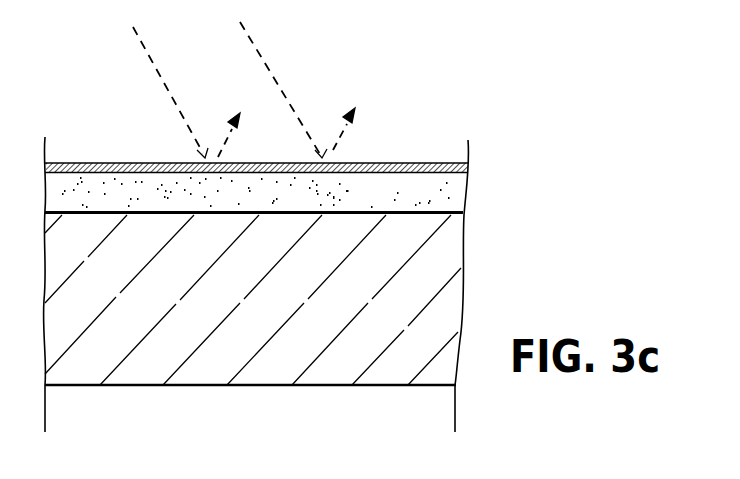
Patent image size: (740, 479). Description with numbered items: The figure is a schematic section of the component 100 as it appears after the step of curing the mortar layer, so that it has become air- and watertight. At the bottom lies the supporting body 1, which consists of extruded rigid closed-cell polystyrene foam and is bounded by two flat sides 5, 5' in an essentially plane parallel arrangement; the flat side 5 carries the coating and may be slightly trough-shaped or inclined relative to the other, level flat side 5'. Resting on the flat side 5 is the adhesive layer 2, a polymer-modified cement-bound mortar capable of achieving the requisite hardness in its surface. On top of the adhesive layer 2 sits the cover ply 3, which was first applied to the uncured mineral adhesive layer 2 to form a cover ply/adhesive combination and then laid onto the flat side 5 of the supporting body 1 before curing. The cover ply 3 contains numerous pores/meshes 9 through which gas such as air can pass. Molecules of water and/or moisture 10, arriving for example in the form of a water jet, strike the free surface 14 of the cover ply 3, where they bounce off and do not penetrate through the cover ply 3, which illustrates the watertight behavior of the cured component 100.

The supporting body 1 is at (265, 356).
The adhesive layer 2 is at (383, 186).
The cover ply 3 is at (84, 163).
The flat side 5 is at (254, 146).
The flat side 5' is at (250, 426).
The pores/meshes 9 is at (164, 163).
The molecules of water and/or moisture 10 is at (263, 58).
The free surface 14 is at (233, 162).
The component 100 is at (502, 222).